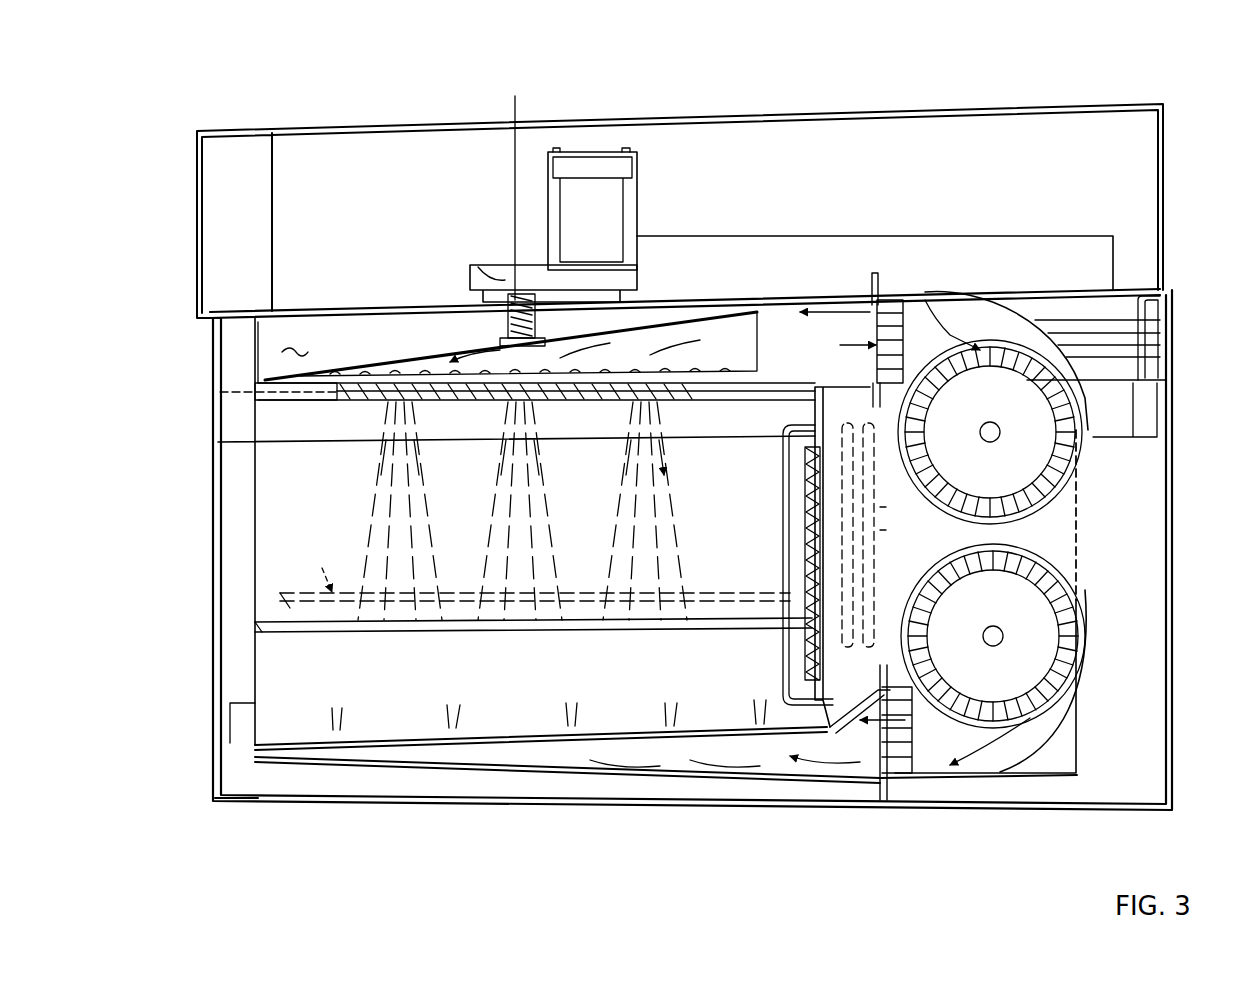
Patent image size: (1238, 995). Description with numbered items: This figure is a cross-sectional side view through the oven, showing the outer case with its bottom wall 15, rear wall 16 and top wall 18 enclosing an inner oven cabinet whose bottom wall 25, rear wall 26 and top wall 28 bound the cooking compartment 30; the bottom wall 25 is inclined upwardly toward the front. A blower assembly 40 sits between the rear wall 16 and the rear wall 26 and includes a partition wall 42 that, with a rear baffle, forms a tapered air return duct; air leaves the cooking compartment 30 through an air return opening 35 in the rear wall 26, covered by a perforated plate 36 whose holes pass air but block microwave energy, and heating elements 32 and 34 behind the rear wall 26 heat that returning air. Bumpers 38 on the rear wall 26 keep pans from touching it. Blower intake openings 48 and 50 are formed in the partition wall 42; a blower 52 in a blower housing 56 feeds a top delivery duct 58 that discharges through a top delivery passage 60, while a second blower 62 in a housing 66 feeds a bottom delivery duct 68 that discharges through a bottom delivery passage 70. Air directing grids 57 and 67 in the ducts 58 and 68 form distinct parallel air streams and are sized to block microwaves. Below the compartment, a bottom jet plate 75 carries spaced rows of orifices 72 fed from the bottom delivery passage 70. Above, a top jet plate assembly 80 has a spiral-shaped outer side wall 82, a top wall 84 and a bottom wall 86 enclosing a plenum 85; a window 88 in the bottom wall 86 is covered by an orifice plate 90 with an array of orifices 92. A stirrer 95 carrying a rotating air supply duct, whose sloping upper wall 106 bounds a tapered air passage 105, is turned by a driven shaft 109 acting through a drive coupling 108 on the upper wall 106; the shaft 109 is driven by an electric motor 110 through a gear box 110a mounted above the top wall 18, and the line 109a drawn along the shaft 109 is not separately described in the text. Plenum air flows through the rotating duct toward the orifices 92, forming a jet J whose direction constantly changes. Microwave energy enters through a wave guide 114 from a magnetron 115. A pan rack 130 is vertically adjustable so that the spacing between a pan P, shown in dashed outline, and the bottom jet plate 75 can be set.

The bottom wall 15 is at (362, 804).
The rear wall 16 is at (1170, 492).
The top wall 18 is at (725, 108).
The bottom wall 25 is at (590, 775).
The rear wall 26 is at (815, 398).
The top wall 28 is at (220, 442).
The cooking compartment 30 is at (278, 545).
The heating element 32 is at (900, 508).
The heating element 34 is at (900, 531).
The air return opening 35 is at (838, 535).
The perforated plate 36 is at (808, 478).
The bumpers 38 is at (785, 463).
The blower assembly 40 is at (1135, 575).
The partition wall 42 is at (1062, 542).
The blower intake opening 48 is at (1020, 433).
The blower intake opening 50 is at (1035, 655).
The blower 52 is at (935, 395).
The blower housing 56 is at (975, 292).
The air directing grid 57 is at (922, 300).
The top delivery duct 58 is at (892, 305).
The top delivery passage 60 is at (872, 305).
The second blower 62 is at (938, 590).
The housing 66 is at (1038, 730).
The air directing grid 67 is at (900, 735).
The bottom delivery duct 68 is at (898, 770).
The bottom delivery passage 70 is at (882, 748).
The orifices 72 is at (556, 722).
The bottom jet plate 75 is at (368, 725).
The top jet plate assembly 80 is at (372, 308).
The outer side wall 82 is at (252, 332).
The top wall 84 is at (718, 295).
The plenum 85 is at (295, 341).
The bottom wall 86 is at (262, 380).
The window 88 is at (346, 402).
The orifice plate 90 is at (370, 460).
The orifices 92 is at (570, 390).
The stirrer 95 is at (650, 318).
The air passage 105 is at (844, 360).
The upper wall 106 is at (410, 356).
The drive coupling 108 is at (505, 327).
The driven shaft 109 is at (470, 280).
The axis 109a is at (515, 104).
The electric motor 110 is at (560, 222).
The gear box 110a is at (495, 266).
The wave guide 114 is at (645, 255).
The magnetron 115 is at (1168, 335).
The pan rack 130 is at (258, 625).
The air jet J is at (425, 548).
The pan P is at (314, 564).